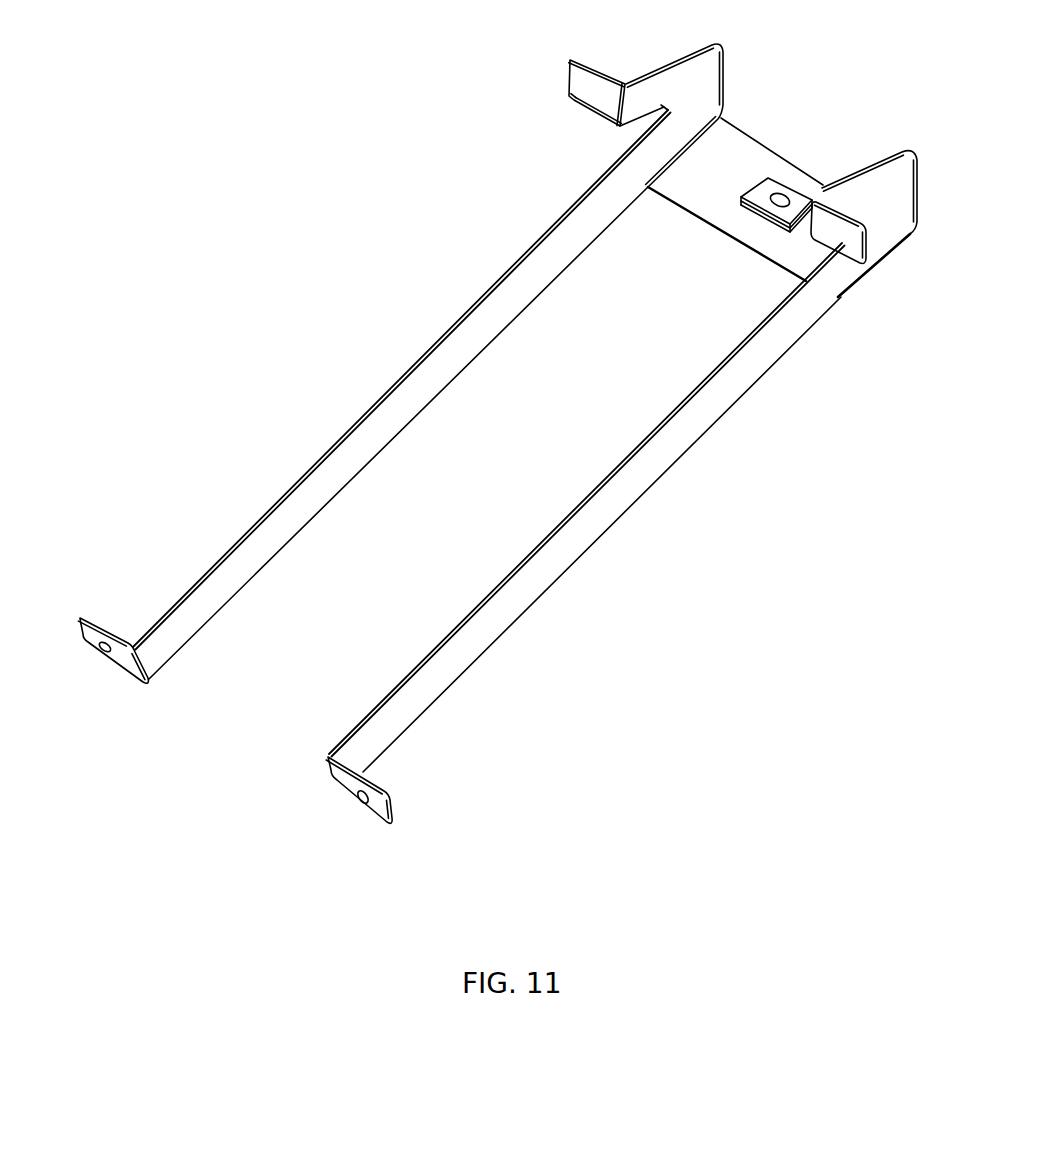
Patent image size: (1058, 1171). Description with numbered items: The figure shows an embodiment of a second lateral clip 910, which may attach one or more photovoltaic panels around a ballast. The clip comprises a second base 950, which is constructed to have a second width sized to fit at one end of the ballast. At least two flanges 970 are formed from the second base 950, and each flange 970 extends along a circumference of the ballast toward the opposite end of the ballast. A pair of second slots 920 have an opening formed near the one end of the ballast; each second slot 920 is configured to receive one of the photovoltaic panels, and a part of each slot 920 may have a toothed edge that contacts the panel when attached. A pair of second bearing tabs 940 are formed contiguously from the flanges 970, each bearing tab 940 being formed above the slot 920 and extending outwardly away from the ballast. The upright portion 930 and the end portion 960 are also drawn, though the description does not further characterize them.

The bracket assembly 910 is at (498, 437).
The second slot 920 is at (617, 140).
The first upright tab 930 is at (716, 86).
The second bearing tab 940 is at (855, 250).
The second base 950 is at (713, 207).
The mounting foot 960 is at (358, 806).
The flange 970 is at (350, 457).